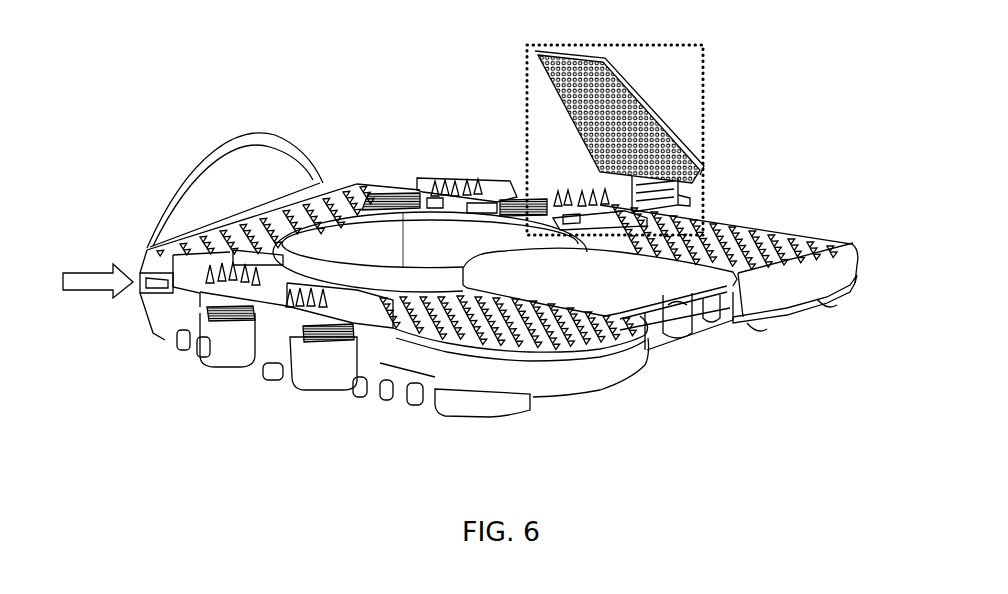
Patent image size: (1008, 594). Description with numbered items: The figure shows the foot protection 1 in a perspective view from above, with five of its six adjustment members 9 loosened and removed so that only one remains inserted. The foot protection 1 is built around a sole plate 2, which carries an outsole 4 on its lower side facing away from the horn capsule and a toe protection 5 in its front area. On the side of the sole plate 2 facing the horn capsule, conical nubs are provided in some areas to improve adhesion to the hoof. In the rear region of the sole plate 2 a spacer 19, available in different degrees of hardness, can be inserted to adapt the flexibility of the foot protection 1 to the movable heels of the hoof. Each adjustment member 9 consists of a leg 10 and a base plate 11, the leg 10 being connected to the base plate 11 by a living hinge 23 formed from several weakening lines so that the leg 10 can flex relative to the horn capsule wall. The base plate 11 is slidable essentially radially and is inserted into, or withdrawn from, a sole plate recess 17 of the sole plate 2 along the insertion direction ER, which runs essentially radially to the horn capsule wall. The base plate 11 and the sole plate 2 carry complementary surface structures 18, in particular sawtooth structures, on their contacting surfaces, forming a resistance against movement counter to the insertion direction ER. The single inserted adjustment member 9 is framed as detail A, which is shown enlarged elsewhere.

The foot protection 1 is at (160, 47).
The sole plate 2 is at (770, 298).
The outsole 4 is at (455, 412).
The toe protection 5 is at (210, 163).
The adjustment member 9 is at (619, 70).
The leg 10 is at (652, 122).
The base plate 11 is at (632, 214).
The sole plate recess 17 is at (391, 182).
The surface structures 18 is at (368, 193).
The spacer 19 is at (680, 323).
The living hinge 23 is at (688, 195).
The detail A is at (704, 64).
The insertion direction ER is at (92, 280).